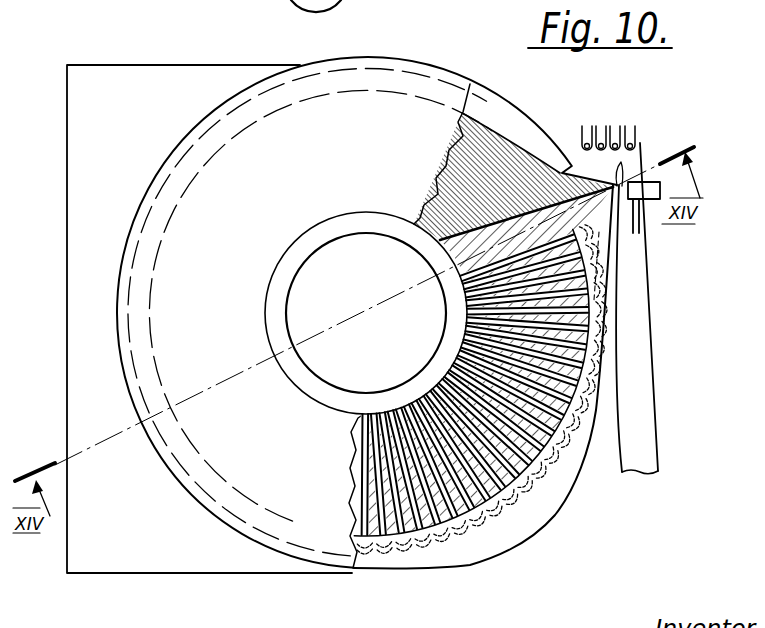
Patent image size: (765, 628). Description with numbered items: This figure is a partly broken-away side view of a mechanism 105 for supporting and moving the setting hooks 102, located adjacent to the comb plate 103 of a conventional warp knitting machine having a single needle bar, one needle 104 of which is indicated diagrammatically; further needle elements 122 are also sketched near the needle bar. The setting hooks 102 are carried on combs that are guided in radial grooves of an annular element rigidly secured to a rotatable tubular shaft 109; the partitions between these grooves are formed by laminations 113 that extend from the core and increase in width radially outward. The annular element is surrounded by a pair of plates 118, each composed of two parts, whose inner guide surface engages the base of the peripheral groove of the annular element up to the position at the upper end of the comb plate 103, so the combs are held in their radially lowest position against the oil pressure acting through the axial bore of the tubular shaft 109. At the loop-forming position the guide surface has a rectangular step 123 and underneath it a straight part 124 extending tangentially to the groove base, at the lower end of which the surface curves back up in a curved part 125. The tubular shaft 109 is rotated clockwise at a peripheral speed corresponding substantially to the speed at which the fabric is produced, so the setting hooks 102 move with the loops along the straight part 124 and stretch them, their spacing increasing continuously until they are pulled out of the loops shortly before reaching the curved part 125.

The setting hooks 102 is at (553, 511).
The comb plate 103 is at (638, 455).
The needle 104 is at (642, 180).
The mechanism 105 is at (449, 58).
The tubular shaft 109 is at (349, 226).
The laminations 113 is at (233, 0).
The plates 118 is at (115, 88).
The hooks 122 is at (629, 126).
The rectangular step 123 is at (617, 228).
The straight part 124 is at (594, 262).
The curved part 125 is at (452, 546).